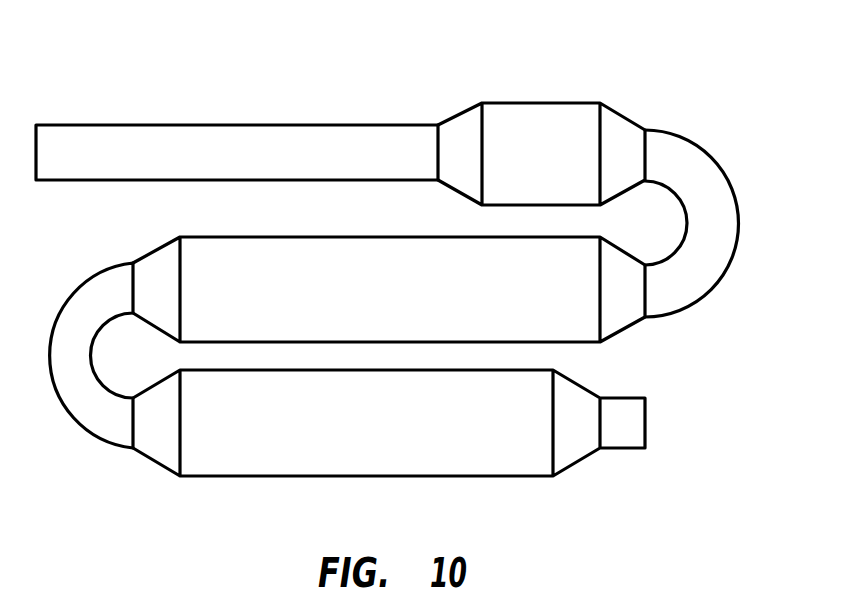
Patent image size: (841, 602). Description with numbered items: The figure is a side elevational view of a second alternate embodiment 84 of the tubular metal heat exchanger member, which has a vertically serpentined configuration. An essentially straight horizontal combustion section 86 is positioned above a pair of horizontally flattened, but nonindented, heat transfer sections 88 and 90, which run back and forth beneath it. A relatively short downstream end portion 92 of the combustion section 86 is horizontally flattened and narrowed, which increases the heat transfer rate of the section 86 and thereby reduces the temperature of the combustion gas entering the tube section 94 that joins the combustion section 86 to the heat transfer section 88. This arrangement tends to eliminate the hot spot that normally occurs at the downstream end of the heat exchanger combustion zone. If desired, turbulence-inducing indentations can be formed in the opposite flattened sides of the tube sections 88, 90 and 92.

The second alternate embodiment of the tubular metal heat exchanger member 84 is at (345, 95).
The combustion section 86 is at (237, 125).
The heat transfer section 88 is at (288, 237).
The heat transfer section 90 is at (291, 476).
The downstream end portion 92 is at (543, 103).
The tube section 94 is at (736, 198).